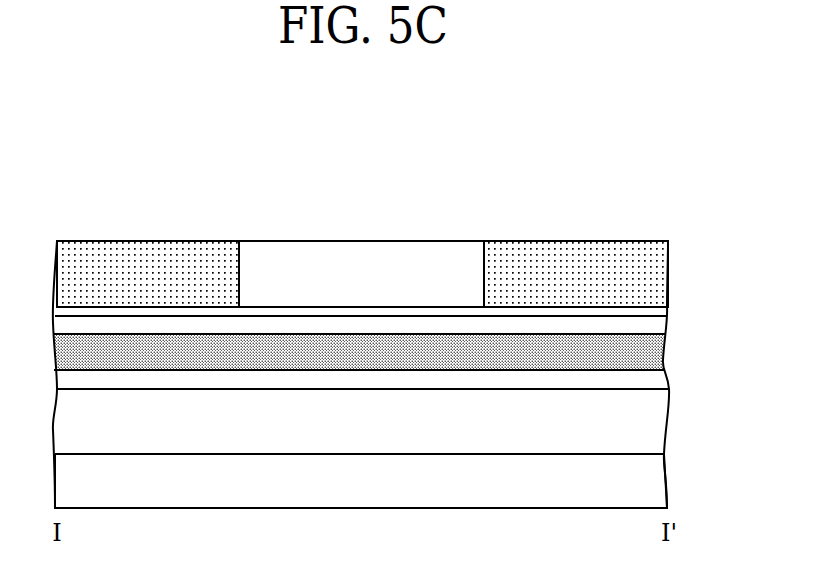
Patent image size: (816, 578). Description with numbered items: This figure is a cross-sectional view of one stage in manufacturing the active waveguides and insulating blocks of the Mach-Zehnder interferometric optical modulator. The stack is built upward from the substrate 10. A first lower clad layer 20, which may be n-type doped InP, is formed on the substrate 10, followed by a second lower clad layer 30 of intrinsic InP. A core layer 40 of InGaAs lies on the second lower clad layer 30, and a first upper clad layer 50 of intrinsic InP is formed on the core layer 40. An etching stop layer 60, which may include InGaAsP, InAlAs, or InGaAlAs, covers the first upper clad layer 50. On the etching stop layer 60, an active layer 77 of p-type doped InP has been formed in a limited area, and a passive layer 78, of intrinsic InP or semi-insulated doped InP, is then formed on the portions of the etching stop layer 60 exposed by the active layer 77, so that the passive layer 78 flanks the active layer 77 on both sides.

The substrate 10 is at (654, 480).
The first lower clad layer 20 is at (659, 423).
The second lower clad layer 30 is at (657, 379).
The core layer 40 is at (657, 353).
The first upper clad layer 50 is at (657, 324).
The etching stop layer 60 is at (657, 310).
The active layer 77 is at (398, 258).
The passive layer 78 is at (660, 273).